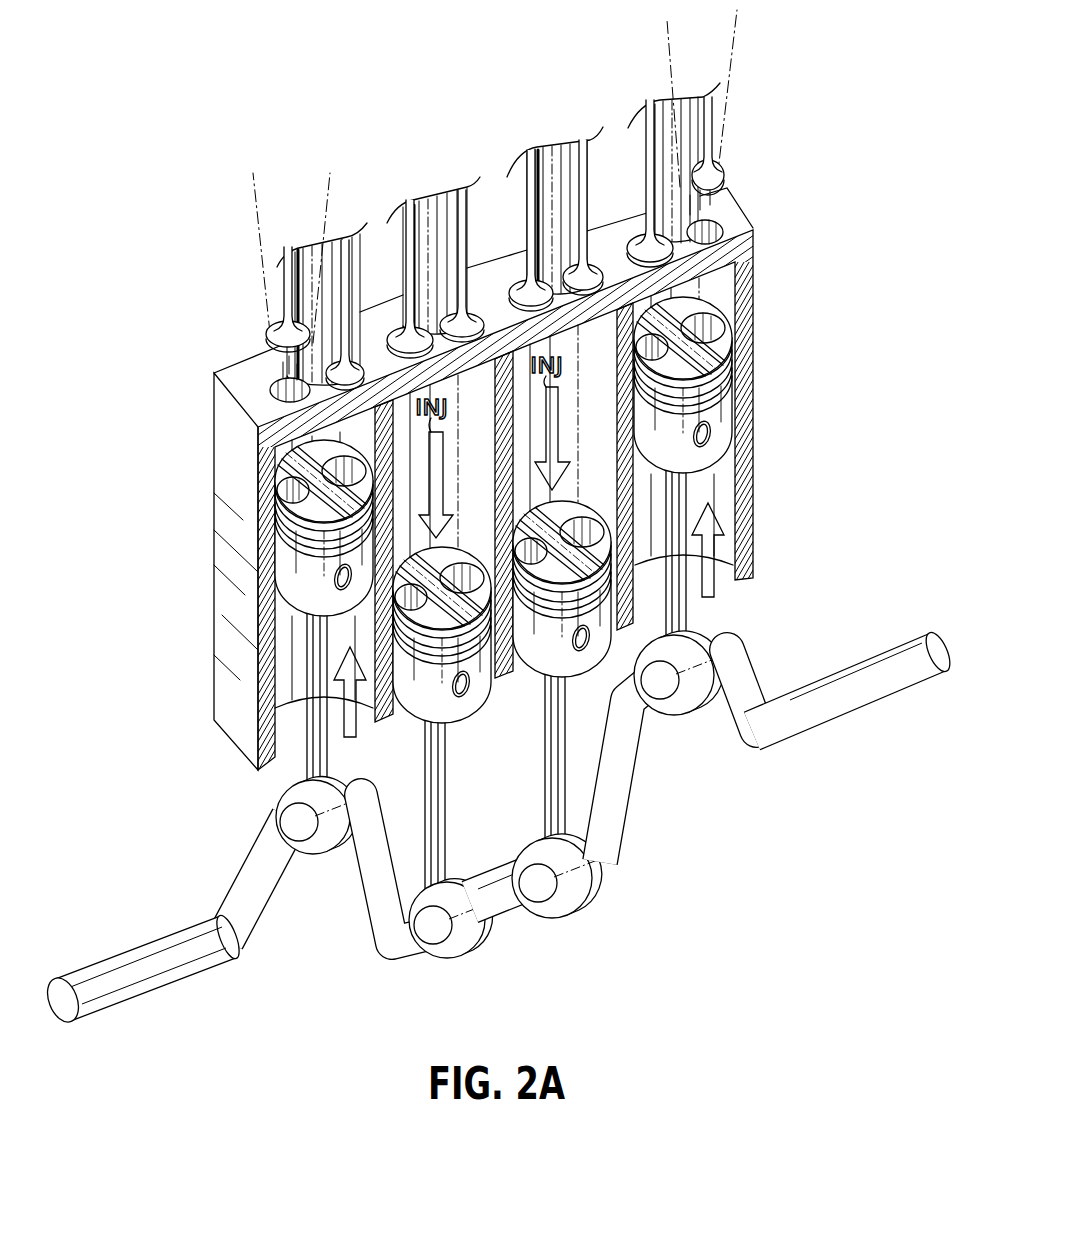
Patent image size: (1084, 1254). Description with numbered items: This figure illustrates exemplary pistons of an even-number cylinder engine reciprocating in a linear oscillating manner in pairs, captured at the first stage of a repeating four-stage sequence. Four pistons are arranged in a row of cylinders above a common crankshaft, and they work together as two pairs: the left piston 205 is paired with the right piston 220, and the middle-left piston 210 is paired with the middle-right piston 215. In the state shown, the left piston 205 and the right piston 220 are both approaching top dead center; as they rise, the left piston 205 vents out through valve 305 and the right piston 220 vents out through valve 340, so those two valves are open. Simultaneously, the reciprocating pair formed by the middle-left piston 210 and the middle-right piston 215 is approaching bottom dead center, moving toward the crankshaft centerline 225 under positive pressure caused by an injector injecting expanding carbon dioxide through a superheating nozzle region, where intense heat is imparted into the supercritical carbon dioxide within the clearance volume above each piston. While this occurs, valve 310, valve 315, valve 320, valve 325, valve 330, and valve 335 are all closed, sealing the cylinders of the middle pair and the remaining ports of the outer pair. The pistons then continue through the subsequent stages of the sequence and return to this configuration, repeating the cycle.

The left piston 205 is at (328, 742).
The middle-left piston 210 is at (446, 787).
The middle-right piston 215 is at (544, 752).
The right piston 220 is at (688, 603).
The crankshaft centerline 225 is at (848, 718).
The valve 305 is at (272, 332).
The valve 310 is at (356, 348).
The valve 315 is at (395, 326).
The valve 320 is at (479, 311).
The valve 325 is at (513, 282).
The valve 330 is at (601, 263).
The valve 335 is at (635, 233).
The valve 340 is at (720, 170).